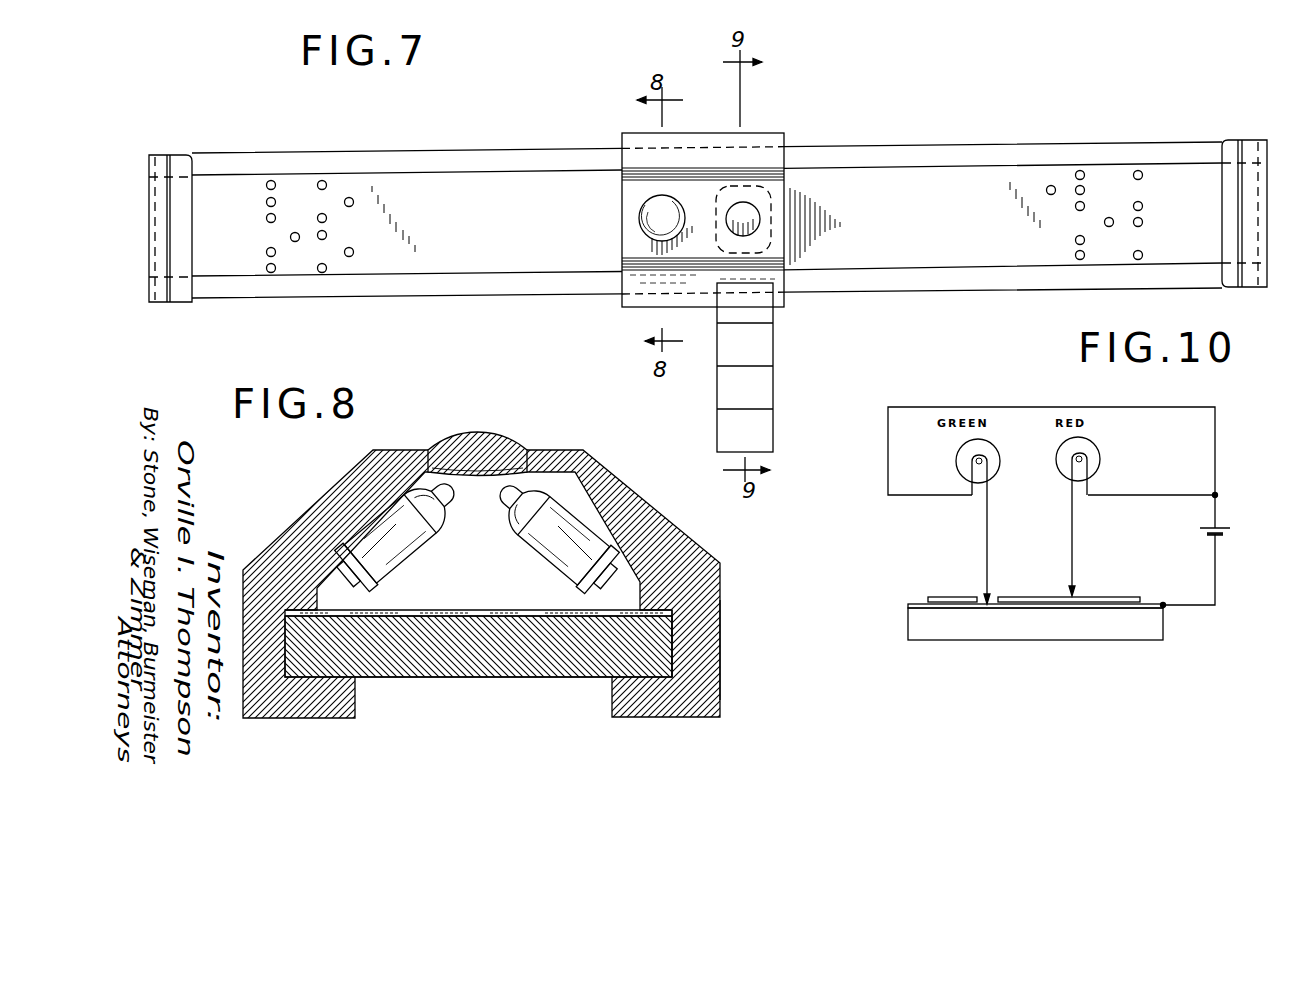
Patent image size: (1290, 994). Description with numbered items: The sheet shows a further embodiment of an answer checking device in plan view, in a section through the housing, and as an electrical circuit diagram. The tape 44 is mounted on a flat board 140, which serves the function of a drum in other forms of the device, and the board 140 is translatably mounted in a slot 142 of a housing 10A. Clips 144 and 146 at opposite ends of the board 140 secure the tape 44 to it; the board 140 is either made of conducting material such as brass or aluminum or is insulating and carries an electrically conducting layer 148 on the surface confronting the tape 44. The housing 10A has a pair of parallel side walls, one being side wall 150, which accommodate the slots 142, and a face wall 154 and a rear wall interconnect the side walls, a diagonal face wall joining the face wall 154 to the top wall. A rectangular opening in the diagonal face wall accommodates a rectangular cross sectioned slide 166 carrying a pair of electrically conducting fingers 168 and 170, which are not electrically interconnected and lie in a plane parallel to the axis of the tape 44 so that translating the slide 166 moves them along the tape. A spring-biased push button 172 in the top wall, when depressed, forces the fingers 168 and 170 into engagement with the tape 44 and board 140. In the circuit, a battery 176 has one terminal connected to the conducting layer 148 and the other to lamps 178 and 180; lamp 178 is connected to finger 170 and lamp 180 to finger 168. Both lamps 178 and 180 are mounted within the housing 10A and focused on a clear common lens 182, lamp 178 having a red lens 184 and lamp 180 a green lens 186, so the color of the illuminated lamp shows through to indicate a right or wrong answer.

In FIG. 7, the housing 10A is at (650, 288).
In FIG. 8, the housing 10A is at (652, 515).
In FIG. 7, the tape 44 is at (972, 181).
In FIG. 8, the tape 44 is at (455, 610).
In FIG. 7, the flat board 140 is at (422, 295).
In FIG. 8, the flat board 140 is at (507, 665).
In FIG. 10, the flat board 140 is at (1128, 630).
In FIG. 8, the slot 142 is at (720, 637).
In FIG. 7, the clip 144 is at (160, 153).
In FIG. 7, the clip 146 is at (1230, 147).
In FIG. 7, the electrically conducting layer 148 is at (922, 280).
In FIG. 8, the electrically conducting layer 148 is at (642, 610).
In FIG. 10, the electrically conducting layer 148 is at (1150, 605).
In FIG. 7, the side wall 150 is at (622, 186).
In FIG. 7, the face wall 154 is at (652, 310).
In FIG. 7, the slide 166 is at (775, 378).
In FIG. 10, the electrically conducting finger 168 is at (985, 600).
In FIG. 10, the electrically conducting finger 170 is at (1070, 592).
In FIG. 7, the push button 172 is at (742, 207).
In FIG. 10, the battery 176 is at (1233, 533).
In FIG. 8, the lamp 178 is at (340, 528).
In FIG. 10, the lamp 178 is at (1100, 455).
In FIG. 8, the lamp 180 is at (628, 528).
In FIG. 10, the lamp 180 is at (957, 456).
In FIG. 7, the common lens 182 is at (668, 198).
In FIG. 8, the common lens 182 is at (490, 436).
In FIG. 8, the lens 184 is at (400, 508).
In FIG. 8, the lens 186 is at (563, 505).